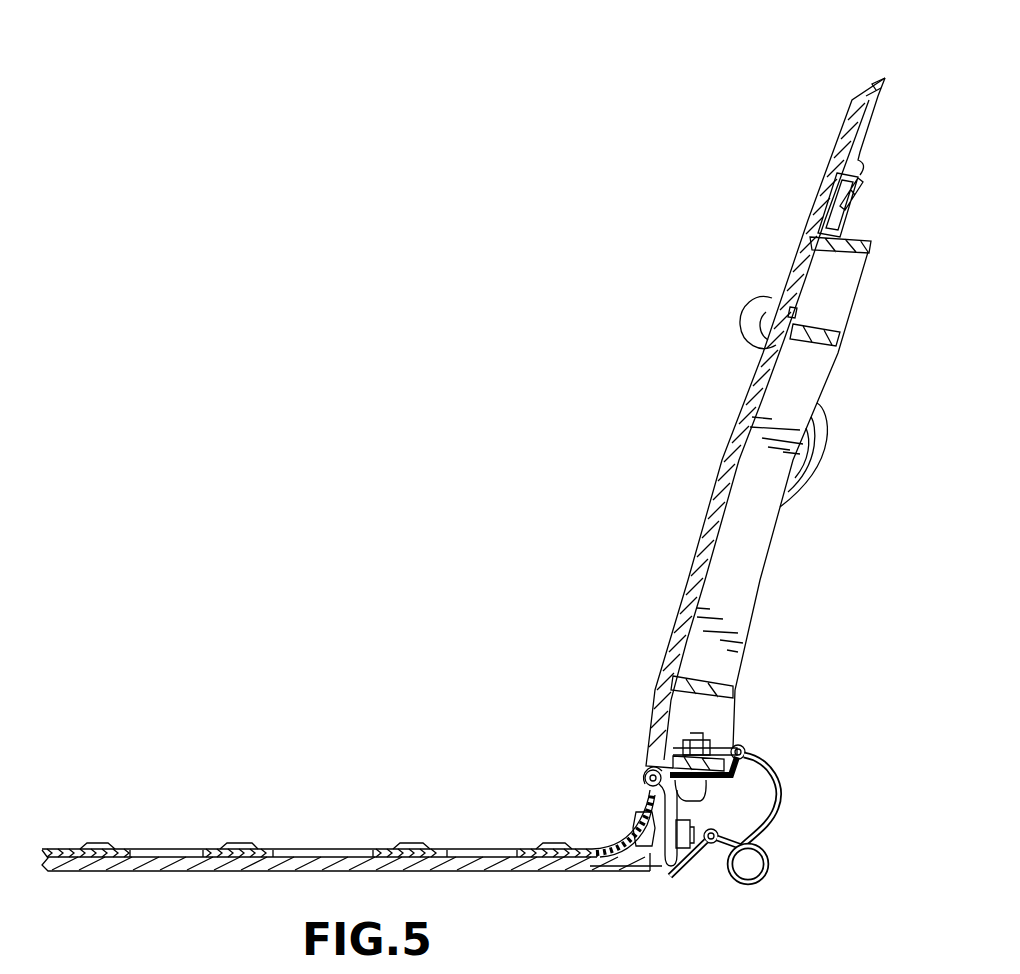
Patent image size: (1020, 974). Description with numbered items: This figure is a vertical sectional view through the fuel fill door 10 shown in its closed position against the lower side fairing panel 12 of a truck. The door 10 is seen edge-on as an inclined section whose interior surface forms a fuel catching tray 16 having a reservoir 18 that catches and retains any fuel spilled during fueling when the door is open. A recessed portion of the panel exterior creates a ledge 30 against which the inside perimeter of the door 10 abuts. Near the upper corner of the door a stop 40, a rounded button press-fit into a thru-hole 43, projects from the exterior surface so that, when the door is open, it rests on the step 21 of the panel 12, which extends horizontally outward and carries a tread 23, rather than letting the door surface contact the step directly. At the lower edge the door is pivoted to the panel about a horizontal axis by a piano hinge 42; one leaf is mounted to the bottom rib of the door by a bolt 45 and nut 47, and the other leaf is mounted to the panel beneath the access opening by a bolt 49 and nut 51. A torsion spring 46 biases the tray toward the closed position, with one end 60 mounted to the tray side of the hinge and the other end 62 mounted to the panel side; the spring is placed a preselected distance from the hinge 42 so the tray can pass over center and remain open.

The fuel fill door 10 is at (772, 262).
The lower side fairing panel 12 is at (848, 106).
The fuel catching tray 16 is at (880, 220).
The reservoir 18 is at (797, 382).
The step 21 is at (175, 850).
The tread 23 is at (60, 840).
The ledge 30 is at (836, 173).
The stop 40 is at (738, 322).
The piano hinge 42 is at (645, 776).
The thru-hole 43 is at (790, 322).
The bolt 45 is at (703, 800).
The torsion spring 46 is at (768, 858).
The nut 47 is at (727, 742).
The bolt 49 is at (642, 846).
The nut 51 is at (686, 868).
The spring end 60 is at (746, 752).
The spring end 62 is at (716, 846).